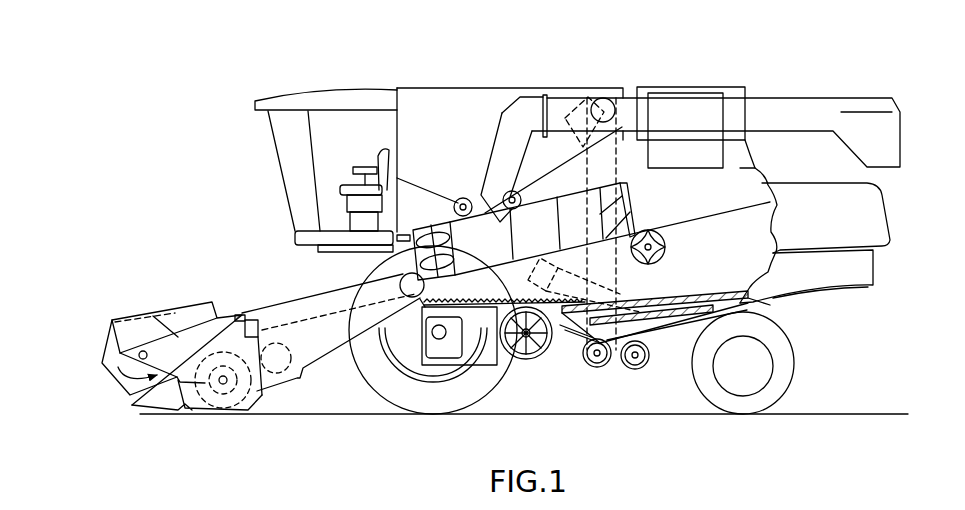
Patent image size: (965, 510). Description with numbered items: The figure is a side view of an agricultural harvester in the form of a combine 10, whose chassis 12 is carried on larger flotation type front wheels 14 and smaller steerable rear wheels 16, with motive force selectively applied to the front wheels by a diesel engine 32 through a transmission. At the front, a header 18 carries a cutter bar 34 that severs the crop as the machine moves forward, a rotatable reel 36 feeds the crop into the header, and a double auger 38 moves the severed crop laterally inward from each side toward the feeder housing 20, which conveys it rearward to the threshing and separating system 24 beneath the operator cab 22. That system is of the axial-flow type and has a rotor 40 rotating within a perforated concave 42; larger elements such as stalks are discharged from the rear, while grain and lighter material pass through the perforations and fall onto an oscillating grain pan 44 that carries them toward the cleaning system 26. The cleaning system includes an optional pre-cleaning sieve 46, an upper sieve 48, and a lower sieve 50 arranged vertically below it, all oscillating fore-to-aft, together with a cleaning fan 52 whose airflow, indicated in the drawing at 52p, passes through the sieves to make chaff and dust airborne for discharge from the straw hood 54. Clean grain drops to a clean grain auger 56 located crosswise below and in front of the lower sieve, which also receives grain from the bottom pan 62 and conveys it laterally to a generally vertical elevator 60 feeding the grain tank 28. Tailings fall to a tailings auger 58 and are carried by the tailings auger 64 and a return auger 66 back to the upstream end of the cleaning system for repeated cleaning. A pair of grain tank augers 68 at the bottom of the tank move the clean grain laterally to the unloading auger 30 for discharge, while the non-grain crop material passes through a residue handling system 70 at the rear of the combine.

The combine 10 is at (325, 88).
The chassis 12 is at (753, 305).
The front wheels 14 is at (372, 388).
The rear wheels 16 is at (795, 373).
The header 18 is at (170, 348).
The feeder housing 20 is at (333, 328).
The operator cab 22 is at (276, 157).
The threshing and separating system 24 is at (375, 262).
The cleaning system 26 is at (568, 378).
The grain tank 28 is at (424, 97).
The unloading auger 30 is at (800, 106).
The diesel engine 32 is at (680, 96).
The cutter bar 34 is at (188, 407).
The rotatable reel 36 is at (108, 345).
The double auger 38 is at (223, 395).
The rotor 40 is at (432, 230).
The perforated concave 42 is at (552, 212).
The grain pan 44 is at (422, 325).
The pre-cleaning sieve 46 is at (618, 300).
The upper sieve 48 is at (704, 287).
The lower sieve 50 is at (668, 318).
The cleaning fan 52 is at (520, 360).
The fan air stream 52p is at (548, 380).
The straw hood 54 is at (880, 213).
The clean grain auger 56 is at (600, 368).
The tailings auger 58 is at (700, 318).
The elevator 60 is at (620, 174).
The bottom pan 62 is at (707, 320).
The tailings auger 64 is at (635, 370).
The return auger 66 is at (580, 292).
The grain tank augers 68 is at (460, 199).
The residue handling system 70 is at (850, 296).